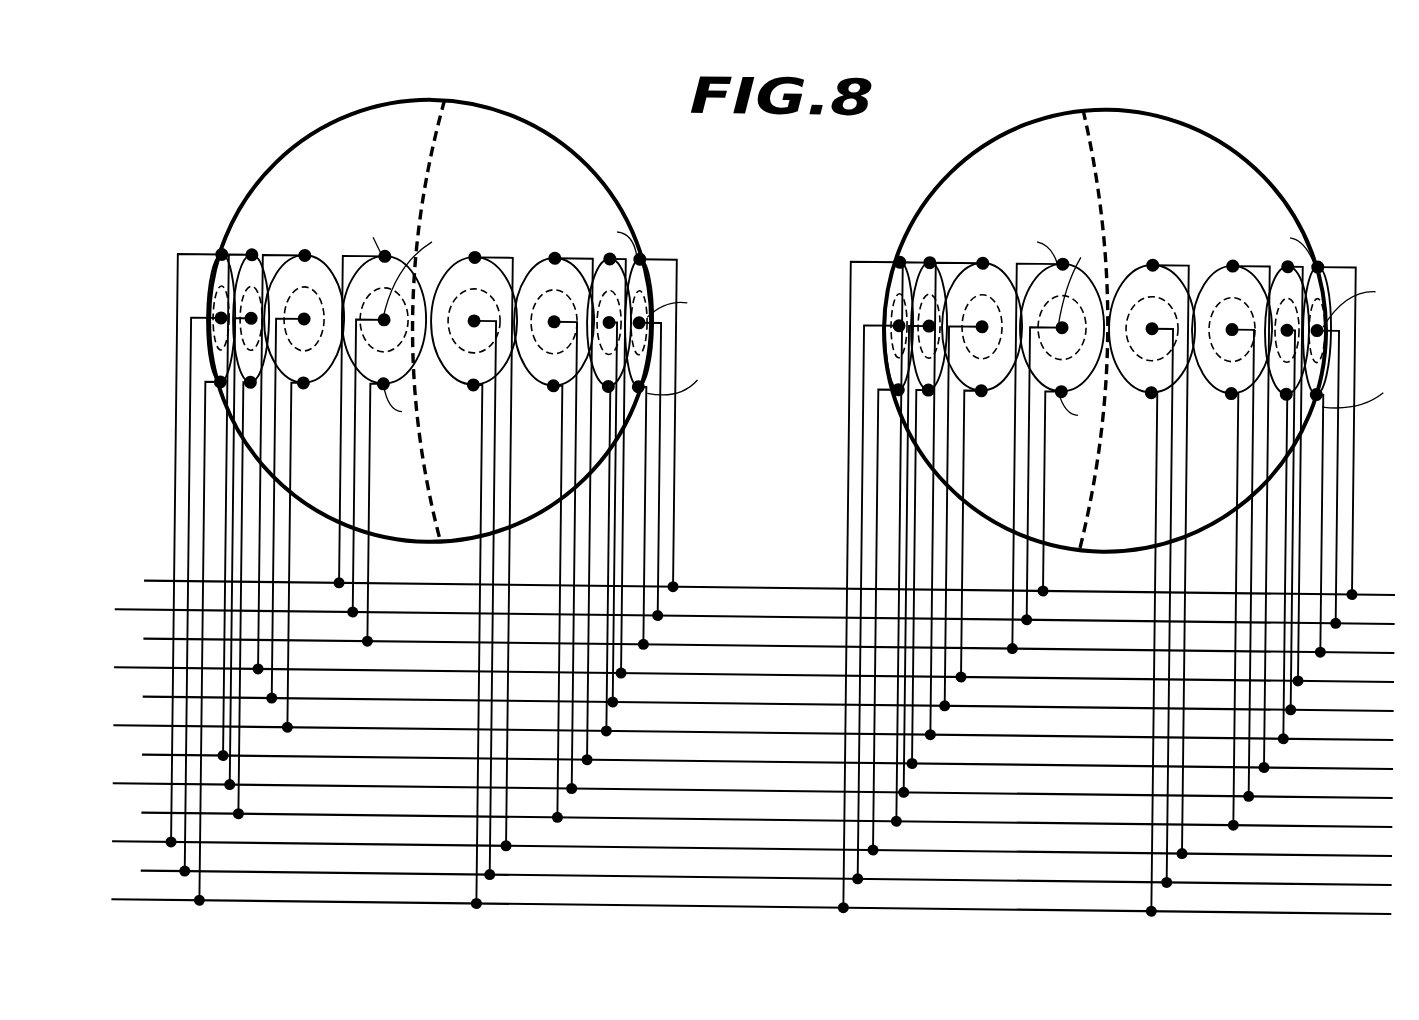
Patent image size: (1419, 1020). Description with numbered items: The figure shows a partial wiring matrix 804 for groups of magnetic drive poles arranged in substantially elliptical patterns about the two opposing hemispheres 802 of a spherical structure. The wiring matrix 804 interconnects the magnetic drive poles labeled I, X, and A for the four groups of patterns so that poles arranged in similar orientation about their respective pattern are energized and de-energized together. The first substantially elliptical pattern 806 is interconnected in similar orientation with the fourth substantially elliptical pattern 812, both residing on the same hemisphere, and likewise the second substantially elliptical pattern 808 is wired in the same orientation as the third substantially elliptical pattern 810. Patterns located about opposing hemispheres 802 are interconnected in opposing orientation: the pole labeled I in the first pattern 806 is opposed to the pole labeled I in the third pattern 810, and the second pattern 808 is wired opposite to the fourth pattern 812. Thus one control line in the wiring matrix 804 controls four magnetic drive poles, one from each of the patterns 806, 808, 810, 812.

The opposing hemispheres 802 is at (428, 145).
The wiring matrix 804 is at (743, 576).
The first substantially elliptical pattern 806 is at (346, 241).
The second substantially elliptical pattern 808 is at (638, 228).
The third substantially elliptical pattern 810 is at (1021, 258).
The fourth substantially elliptical pattern 812 is at (1313, 230).